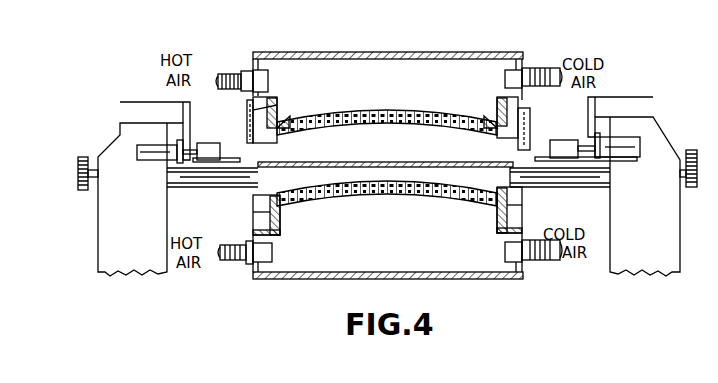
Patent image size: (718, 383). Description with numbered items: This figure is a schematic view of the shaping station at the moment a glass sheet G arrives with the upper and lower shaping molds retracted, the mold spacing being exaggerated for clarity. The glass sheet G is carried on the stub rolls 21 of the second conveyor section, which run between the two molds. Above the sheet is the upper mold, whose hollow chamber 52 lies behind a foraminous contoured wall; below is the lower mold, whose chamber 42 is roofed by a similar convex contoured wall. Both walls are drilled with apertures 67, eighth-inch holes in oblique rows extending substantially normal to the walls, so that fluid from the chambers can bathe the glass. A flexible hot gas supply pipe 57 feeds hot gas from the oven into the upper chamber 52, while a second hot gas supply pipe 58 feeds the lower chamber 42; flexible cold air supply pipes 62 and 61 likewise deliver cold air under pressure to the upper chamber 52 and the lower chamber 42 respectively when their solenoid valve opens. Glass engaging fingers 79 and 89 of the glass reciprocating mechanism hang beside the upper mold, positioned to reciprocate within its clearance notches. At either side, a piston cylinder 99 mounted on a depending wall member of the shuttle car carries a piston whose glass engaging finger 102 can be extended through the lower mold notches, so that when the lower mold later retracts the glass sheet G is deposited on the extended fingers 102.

The stub rolls 21 is at (178, 176).
The chamber 42 is at (392, 244).
The hollow chamber 52 is at (384, 101).
The hot gas supply pipe 57 is at (224, 70).
The hot gas supply pipe 58 is at (228, 260).
The cold air supply pipe 61 is at (548, 260).
The cold air supply pipe 62 is at (550, 68).
The apertures 67 is at (486, 198).
The glass engaging finger 79 is at (260, 115).
The glass engaging finger 89 is at (514, 114).
The piston cylinder 99 is at (137, 150).
The glass engaging finger 102 is at (205, 144).
The glass sheet G is at (372, 165).